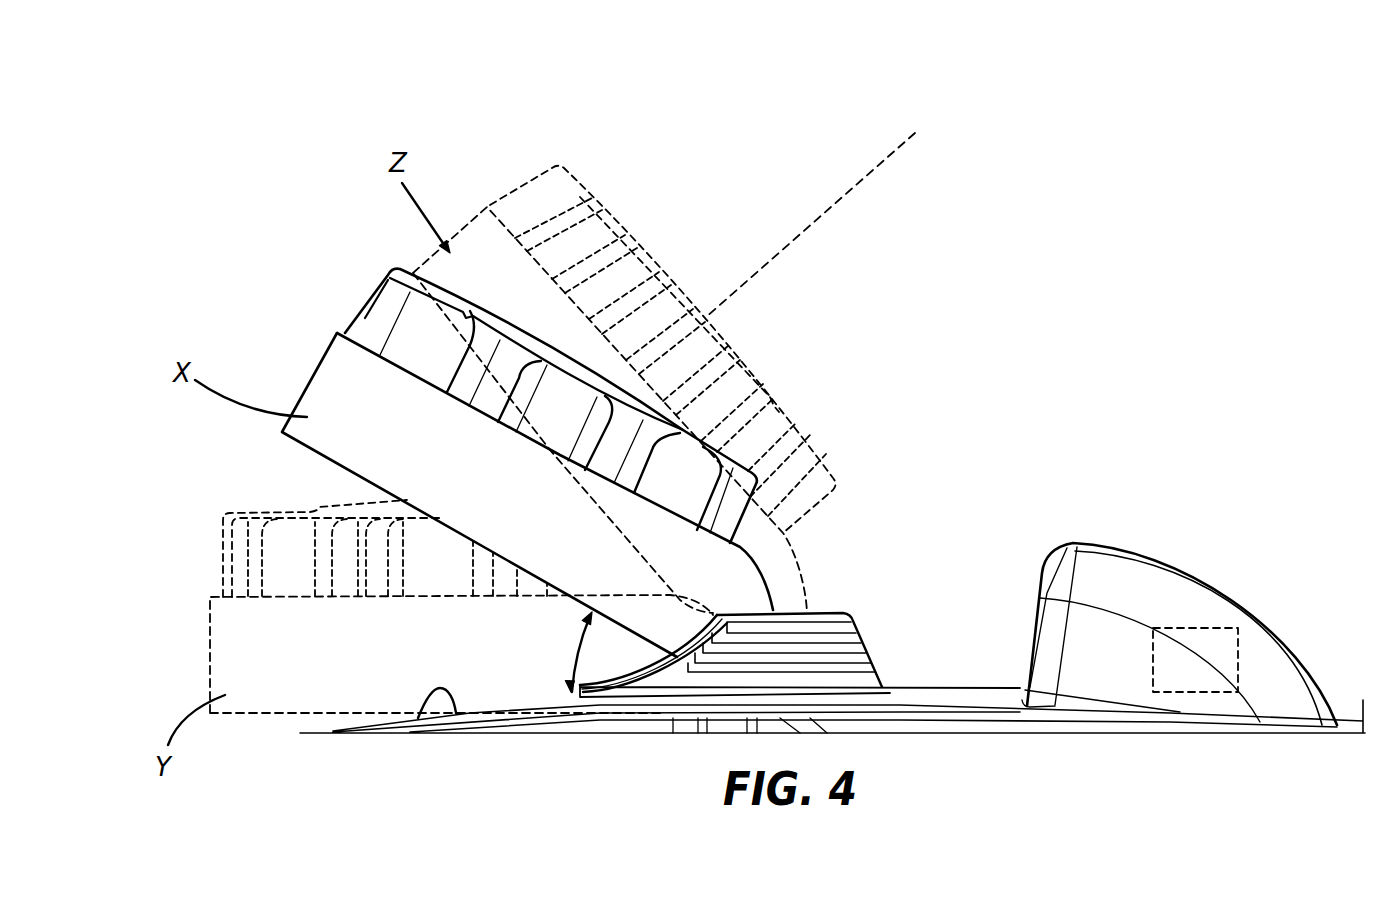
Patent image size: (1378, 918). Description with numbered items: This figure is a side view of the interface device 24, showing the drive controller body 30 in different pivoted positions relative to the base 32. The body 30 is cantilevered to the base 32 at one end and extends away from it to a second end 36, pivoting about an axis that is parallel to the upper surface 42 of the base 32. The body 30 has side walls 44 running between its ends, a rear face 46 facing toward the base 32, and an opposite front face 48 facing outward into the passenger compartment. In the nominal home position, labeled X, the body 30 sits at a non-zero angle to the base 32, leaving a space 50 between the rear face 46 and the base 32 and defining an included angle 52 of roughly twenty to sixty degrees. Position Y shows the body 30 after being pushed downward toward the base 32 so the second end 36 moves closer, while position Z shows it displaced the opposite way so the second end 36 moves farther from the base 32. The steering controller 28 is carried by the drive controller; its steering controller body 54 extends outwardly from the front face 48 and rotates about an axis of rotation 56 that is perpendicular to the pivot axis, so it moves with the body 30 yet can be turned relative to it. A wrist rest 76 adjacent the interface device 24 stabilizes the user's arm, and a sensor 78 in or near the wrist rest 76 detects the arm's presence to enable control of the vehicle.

The interface device 24 is at (952, 245).
The steering controller 28 is at (352, 307).
The body 30 is at (555, 603).
The base 32 is at (928, 728).
The second end 36 is at (463, 220).
The upper surface 42 is at (418, 718).
The side walls 44 is at (497, 505).
The rear face 46 is at (350, 472).
The front face 48 is at (397, 362).
The space 50 is at (280, 455).
The included angle 52 is at (580, 653).
The steering controller body 54 is at (467, 390).
The axis of rotation 56 is at (872, 170).
The wrist rest 76 is at (1185, 588).
The sensor 78 is at (1222, 648).